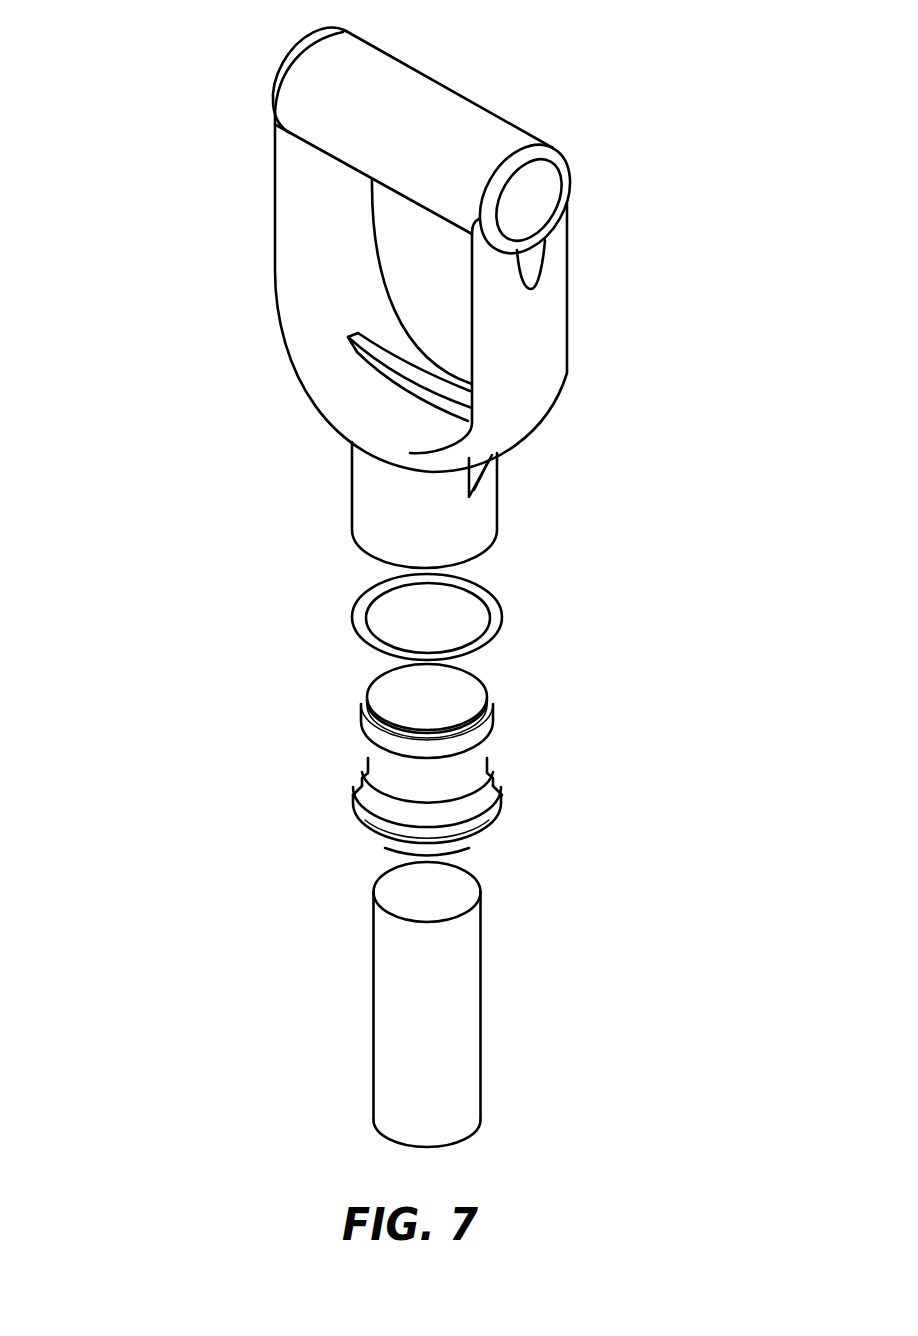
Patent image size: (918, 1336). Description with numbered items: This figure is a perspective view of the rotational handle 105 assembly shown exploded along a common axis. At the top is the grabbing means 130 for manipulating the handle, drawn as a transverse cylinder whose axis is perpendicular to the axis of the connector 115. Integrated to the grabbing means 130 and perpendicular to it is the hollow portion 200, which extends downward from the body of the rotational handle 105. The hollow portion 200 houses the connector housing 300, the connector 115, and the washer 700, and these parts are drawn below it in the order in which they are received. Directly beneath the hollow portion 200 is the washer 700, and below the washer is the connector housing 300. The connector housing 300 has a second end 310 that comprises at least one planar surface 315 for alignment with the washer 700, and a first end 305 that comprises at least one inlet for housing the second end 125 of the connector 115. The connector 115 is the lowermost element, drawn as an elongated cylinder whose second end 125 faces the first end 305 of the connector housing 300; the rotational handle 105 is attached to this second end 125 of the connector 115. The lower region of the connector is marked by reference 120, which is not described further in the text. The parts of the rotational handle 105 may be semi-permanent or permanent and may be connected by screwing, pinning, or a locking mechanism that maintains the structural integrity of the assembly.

The rotational handle 105 is at (140, 364).
The grabbing means 130 is at (480, 128).
The hollow portion 200 is at (497, 502).
The washer 700 is at (502, 617).
The second end 310 is at (487, 683).
The planar surface 315 is at (383, 683).
The connector housing 300 is at (383, 762).
The first end 305 is at (375, 843).
The second end 125 is at (383, 893).
The connector 115 is at (383, 1017).
The canister bottom 120 is at (383, 1103).